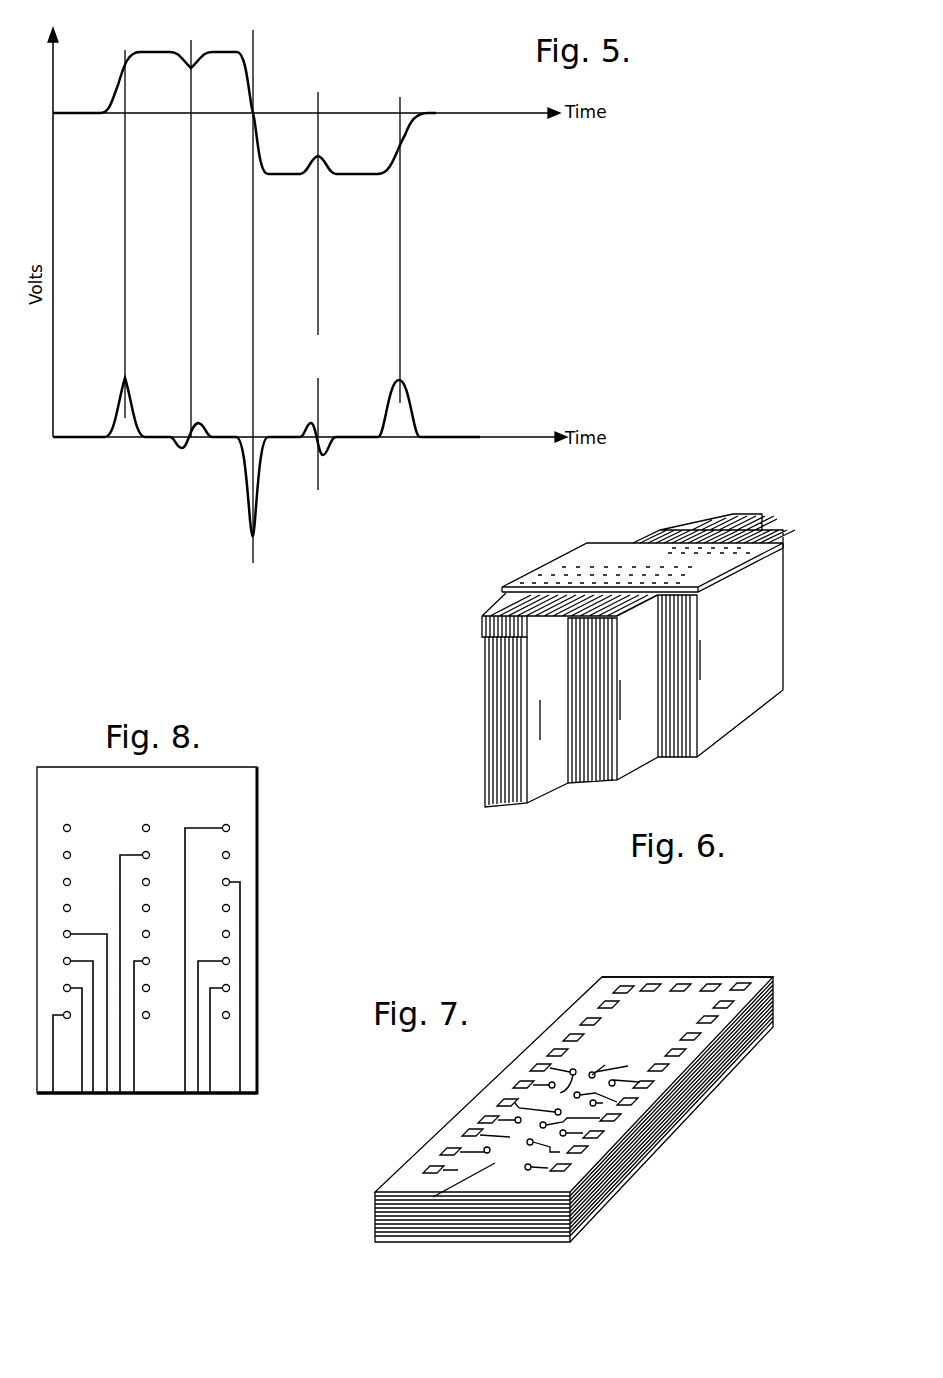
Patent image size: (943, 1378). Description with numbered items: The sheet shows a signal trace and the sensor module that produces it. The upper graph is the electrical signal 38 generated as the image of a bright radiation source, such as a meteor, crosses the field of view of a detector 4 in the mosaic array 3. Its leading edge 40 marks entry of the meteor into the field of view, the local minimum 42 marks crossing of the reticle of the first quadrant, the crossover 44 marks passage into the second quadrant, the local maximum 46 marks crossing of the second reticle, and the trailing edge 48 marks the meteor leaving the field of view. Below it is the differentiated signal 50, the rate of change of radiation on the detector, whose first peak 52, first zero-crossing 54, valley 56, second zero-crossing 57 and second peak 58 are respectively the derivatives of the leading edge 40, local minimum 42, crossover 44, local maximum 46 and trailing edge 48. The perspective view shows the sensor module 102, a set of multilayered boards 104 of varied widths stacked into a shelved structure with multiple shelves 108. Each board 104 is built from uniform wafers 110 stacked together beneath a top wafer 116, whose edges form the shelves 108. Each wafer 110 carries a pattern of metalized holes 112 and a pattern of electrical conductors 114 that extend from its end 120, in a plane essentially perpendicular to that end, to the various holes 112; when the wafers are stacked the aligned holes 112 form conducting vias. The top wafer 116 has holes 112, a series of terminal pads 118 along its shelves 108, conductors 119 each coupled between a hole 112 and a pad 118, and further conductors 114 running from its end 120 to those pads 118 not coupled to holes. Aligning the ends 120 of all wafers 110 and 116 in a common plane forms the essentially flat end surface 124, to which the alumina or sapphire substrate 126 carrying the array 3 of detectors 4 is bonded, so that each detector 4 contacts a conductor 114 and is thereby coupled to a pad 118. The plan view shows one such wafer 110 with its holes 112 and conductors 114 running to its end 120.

In FIG. 5, the electrical signal 38 is at (223, 44).
In FIG. 5, the leading edge 40 is at (126, 83).
In FIG. 5, the local minimum 42 is at (191, 68).
In FIG. 5, the crossover 44 is at (255, 112).
In FIG. 5, the local maximum 46 is at (320, 157).
In FIG. 5, the trailing edge 48 is at (402, 150).
In FIG. 5, the differentiated signal 50 is at (285, 401).
In FIG. 5, the first peak 52 is at (126, 380).
In FIG. 5, the first zero-crossing 54 is at (190, 441).
In FIG. 5, the valley 56 is at (255, 545).
In FIG. 5, the second zero-crossing 57 is at (315, 440).
In FIG. 5, the second peak 58 is at (402, 383).
In FIG. 6, the sensor module 102 is at (630, 637).
In FIG. 6, the mosaic array 3 is at (668, 618).
In FIG. 6, the electro-optical detector 4 is at (587, 567).
In FIG. 6, the end surface 124 is at (672, 536).
In FIG. 6, the substrate 126 is at (783, 543).
In FIG. 6, the multilayered board 104 is at (494, 695).
In FIG. 7, the multilayered board 104 is at (600, 1101).
In FIG. 6, the shelf 108 is at (634, 768).
In FIG. 8, the wafer 110 is at (150, 801).
In FIG. 7, the wafer 110 is at (727, 1055).
In FIG. 8, the metalized hole 112 is at (150, 852).
In FIG. 7, the metalized hole 112 is at (556, 1112).
In FIG. 8, the electrical conductor 114 is at (210, 1073).
In FIG. 7, the electrical conductor 114 is at (508, 1140).
In FIG. 7, the top wafer 116 is at (764, 980).
In FIG. 7, the terminal pad 118 is at (510, 1068).
In FIG. 7, the conductor 119 is at (613, 1080).
In FIG. 8, the end 120 is at (160, 1095).
In FIG. 7, the end 120 is at (513, 1138).